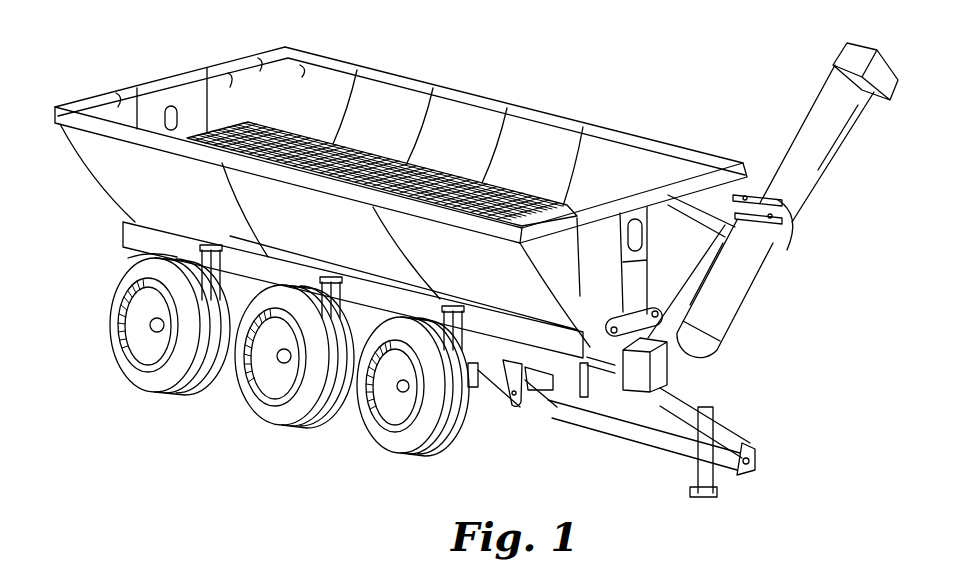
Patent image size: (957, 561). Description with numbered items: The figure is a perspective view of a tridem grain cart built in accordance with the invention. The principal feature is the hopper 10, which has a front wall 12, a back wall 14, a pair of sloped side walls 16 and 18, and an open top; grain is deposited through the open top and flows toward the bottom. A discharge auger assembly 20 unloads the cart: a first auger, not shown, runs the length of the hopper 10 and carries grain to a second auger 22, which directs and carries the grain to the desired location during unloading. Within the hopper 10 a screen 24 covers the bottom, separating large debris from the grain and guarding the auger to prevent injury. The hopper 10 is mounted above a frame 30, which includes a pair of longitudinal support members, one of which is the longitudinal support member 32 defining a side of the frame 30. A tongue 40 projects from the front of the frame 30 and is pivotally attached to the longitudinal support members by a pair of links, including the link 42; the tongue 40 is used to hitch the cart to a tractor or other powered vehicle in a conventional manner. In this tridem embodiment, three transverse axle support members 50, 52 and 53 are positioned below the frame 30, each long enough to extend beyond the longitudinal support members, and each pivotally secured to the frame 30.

The hopper 10 is at (655, 109).
The front wall 12 is at (713, 200).
The back wall 14 is at (275, 62).
The sloped side wall 16 is at (302, 72).
The sloped side wall 18 is at (112, 181).
The discharge auger assembly 20 is at (761, 371).
The second auger 22 is at (813, 178).
The screen 24 is at (443, 167).
The frame 30 is at (466, 466).
The longitudinal support member 32 is at (143, 256).
The tongue 40 is at (621, 438).
The link 42 is at (534, 388).
The transverse axle support member 50 is at (496, 398).
The transverse axle support member 52 is at (312, 367).
The transverse axle support member 53 is at (200, 330).